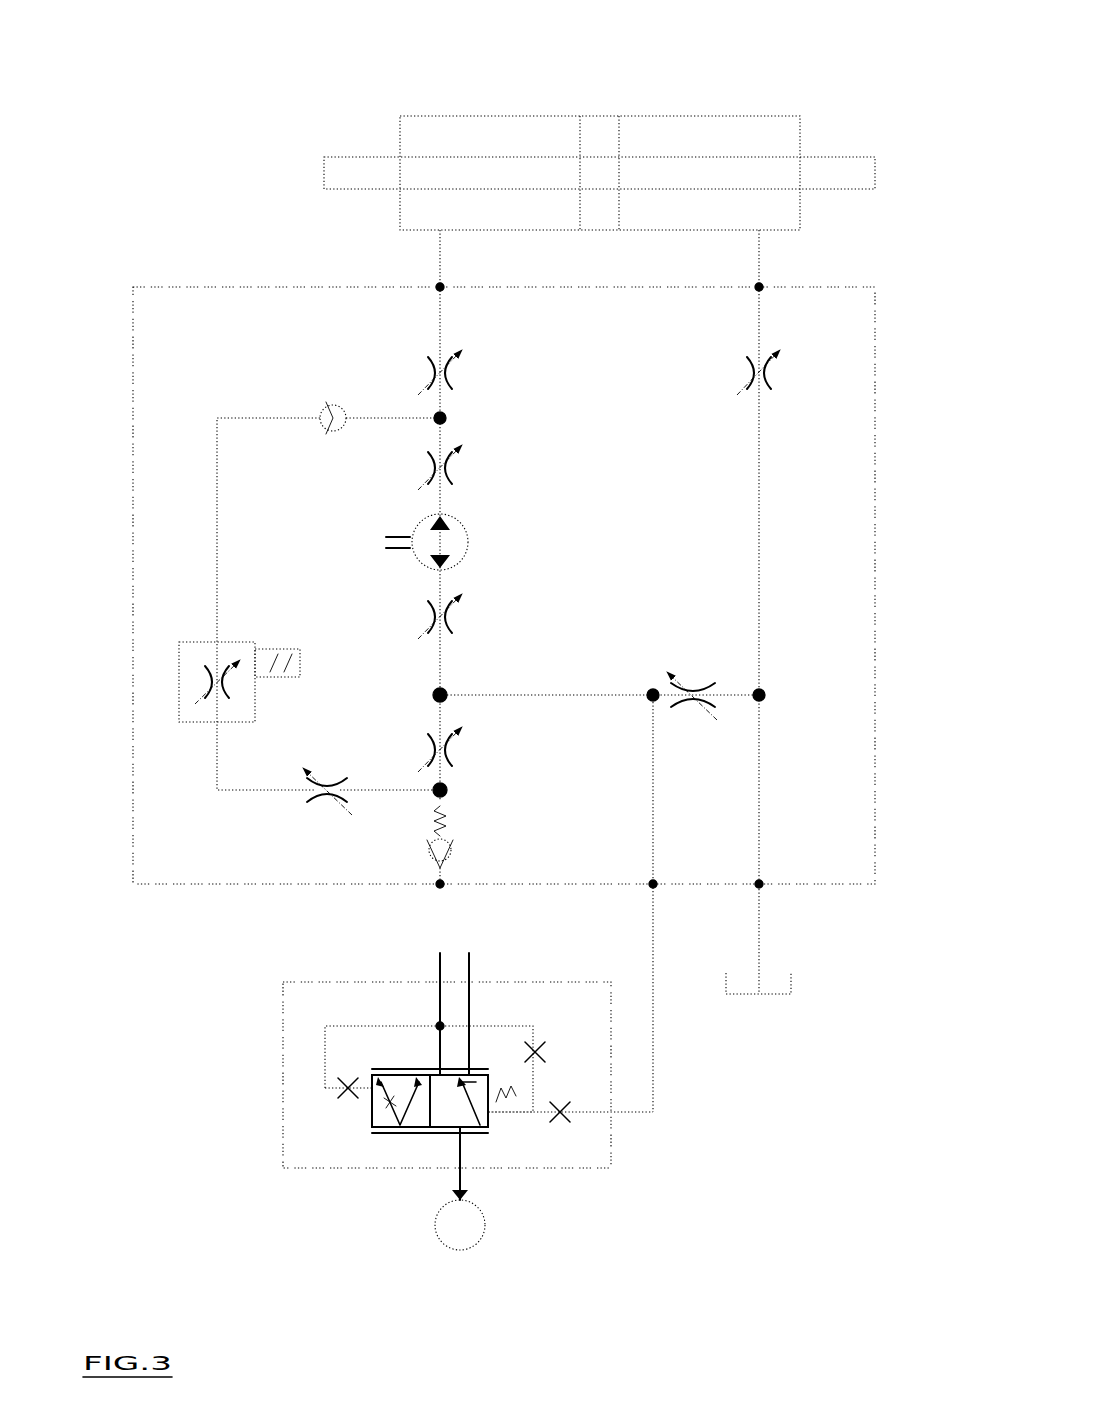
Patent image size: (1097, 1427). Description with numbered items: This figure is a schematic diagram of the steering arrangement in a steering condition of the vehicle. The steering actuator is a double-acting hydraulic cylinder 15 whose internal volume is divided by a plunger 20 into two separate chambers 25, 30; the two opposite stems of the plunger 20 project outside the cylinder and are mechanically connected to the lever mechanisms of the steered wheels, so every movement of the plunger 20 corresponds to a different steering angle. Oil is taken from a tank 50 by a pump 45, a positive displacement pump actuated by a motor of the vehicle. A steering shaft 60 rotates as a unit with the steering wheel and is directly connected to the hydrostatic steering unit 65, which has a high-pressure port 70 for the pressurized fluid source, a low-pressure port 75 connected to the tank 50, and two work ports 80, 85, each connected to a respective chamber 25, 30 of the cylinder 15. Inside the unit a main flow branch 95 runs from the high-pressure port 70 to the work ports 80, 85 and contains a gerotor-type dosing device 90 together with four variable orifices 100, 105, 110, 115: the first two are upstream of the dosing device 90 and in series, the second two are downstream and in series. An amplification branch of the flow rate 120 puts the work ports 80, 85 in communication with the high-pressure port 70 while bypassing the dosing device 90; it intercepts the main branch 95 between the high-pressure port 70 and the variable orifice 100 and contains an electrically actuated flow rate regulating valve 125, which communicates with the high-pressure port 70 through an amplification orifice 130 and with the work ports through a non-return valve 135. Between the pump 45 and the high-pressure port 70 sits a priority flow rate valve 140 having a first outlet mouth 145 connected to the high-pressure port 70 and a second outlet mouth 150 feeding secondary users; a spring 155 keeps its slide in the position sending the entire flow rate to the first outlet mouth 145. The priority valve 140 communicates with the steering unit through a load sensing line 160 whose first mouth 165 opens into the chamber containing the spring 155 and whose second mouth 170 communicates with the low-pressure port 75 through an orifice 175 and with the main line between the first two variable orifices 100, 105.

The double-acting hydraulic cylinder 15 is at (800, 108).
The plunger 20 is at (600, 136).
The chamber 25 is at (487, 145).
The chamber 30 is at (715, 145).
The pump 45 is at (435, 1230).
The tank 50 is at (782, 994).
The steering shaft 60 is at (405, 535).
The hydrostatic steering unit 65 is at (200, 286).
The high-pressure port 70 is at (440, 884).
The low-pressure port 75 is at (759, 884).
The work port 80 is at (440, 287).
The work port 85 is at (759, 287).
The dosing device 90 is at (470, 540).
The main flow branch 95 is at (437, 810).
The variable orifice 100 is at (446, 750).
The variable orifice 105 is at (446, 617).
The variable orifice 110 is at (446, 468).
The variable orifice 115 is at (446, 375).
The amplification branch of the flow rate 120 is at (217, 525).
The flow rate regulating valve 125 is at (200, 672).
The amplification orifice 130 is at (320, 797).
The non-return valve 135 is at (320, 405).
The priority flow rate valve 140 is at (283, 1100).
The first outlet mouth 145 is at (440, 1026).
The second outlet mouth 150 is at (469, 1030).
The spring 155 is at (518, 1106).
The load sensing line 160 is at (653, 1030).
The first mouth 165 is at (489, 1133).
The second mouth 170 is at (653, 884).
The orifice 175 is at (690, 690).